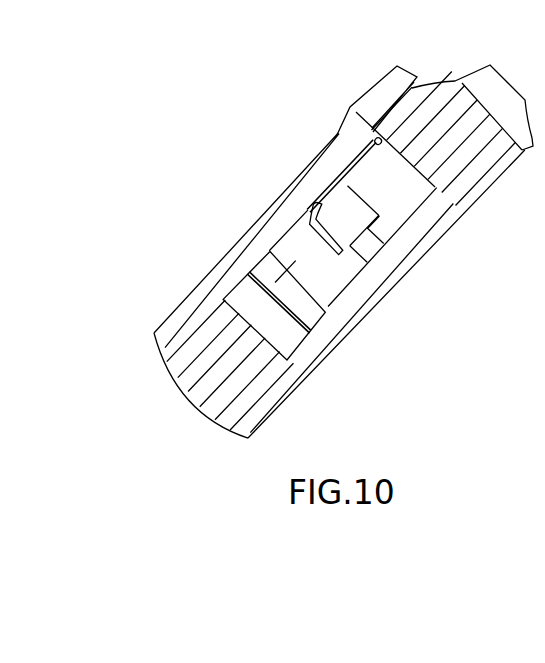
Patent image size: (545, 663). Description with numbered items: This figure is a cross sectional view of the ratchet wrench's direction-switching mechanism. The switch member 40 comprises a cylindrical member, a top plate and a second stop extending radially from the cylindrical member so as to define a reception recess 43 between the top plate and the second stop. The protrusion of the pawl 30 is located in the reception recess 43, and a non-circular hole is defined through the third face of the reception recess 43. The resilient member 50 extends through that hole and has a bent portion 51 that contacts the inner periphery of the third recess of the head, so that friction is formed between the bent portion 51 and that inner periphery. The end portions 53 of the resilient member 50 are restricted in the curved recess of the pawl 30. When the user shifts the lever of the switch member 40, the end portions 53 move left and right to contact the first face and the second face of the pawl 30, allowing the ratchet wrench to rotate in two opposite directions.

The switch member 40 is at (272, 397).
The pawl 30 is at (268, 263).
The reception recess 43 is at (360, 227).
The resilient member 50 is at (350, 160).
The end portions 53 is at (317, 205).
The bent portion 51 is at (356, 112).